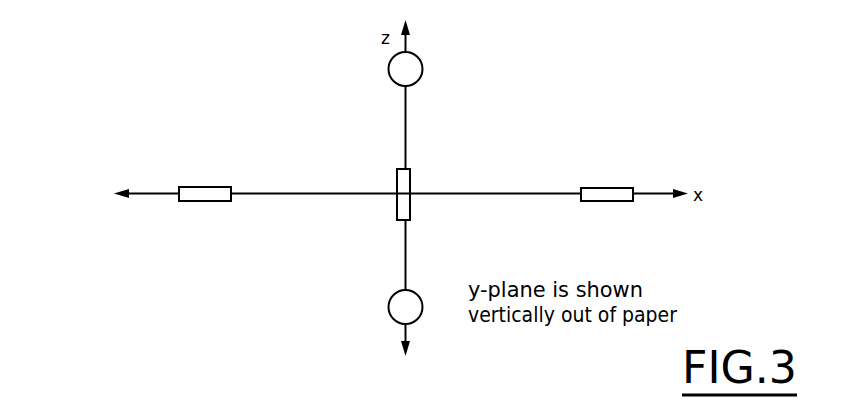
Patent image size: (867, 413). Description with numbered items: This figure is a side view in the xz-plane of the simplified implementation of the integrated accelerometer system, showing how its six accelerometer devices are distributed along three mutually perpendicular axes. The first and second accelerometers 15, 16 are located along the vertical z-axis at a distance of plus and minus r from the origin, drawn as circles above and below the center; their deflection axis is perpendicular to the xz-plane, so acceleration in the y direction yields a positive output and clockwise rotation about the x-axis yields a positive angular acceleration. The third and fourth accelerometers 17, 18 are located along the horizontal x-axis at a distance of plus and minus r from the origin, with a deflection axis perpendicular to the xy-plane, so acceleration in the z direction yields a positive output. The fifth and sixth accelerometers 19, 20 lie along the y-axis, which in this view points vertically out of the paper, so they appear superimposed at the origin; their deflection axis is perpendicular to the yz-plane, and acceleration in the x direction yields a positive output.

The first accelerometer 15 is at (423, 72).
The second accelerometer 16 is at (389, 300).
The third accelerometer 17 is at (612, 188).
The fourth accelerometer 18 is at (205, 187).
The fifth accelerometer 19 is at (410, 178).
The sixth accelerometer 20 is at (403, 194).